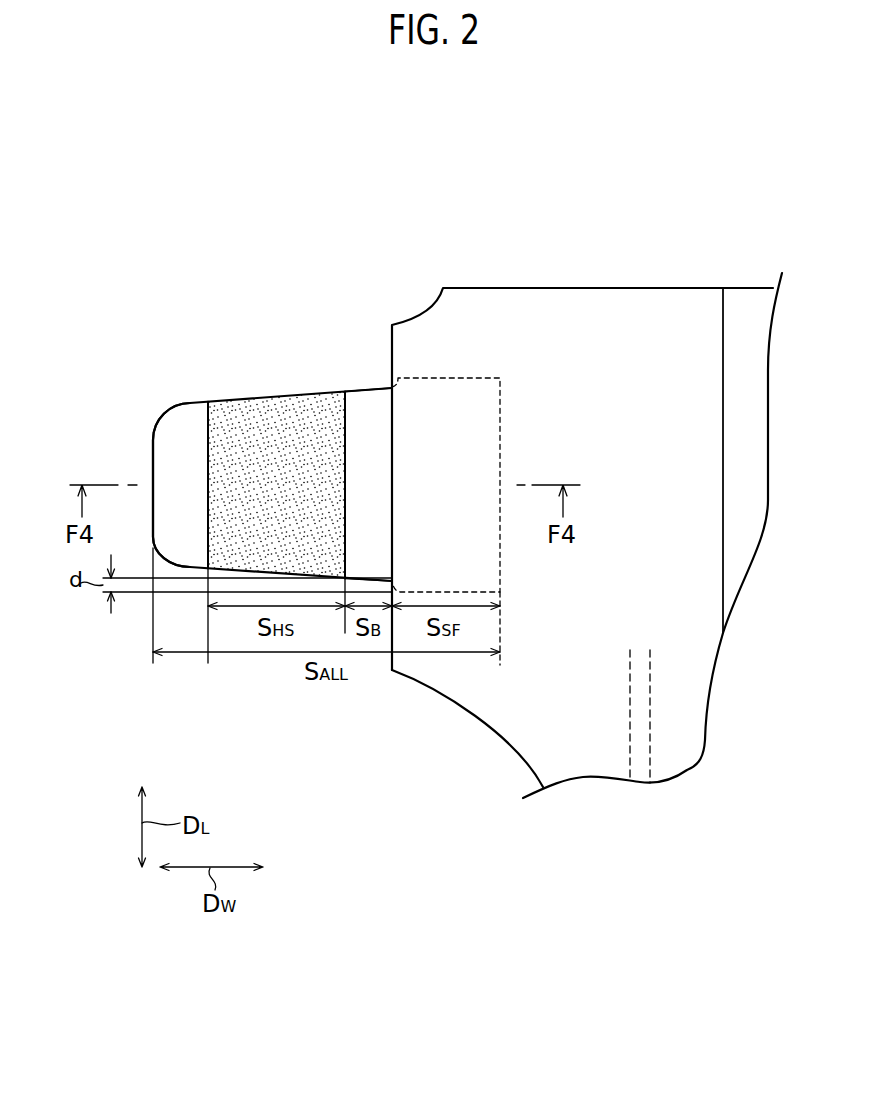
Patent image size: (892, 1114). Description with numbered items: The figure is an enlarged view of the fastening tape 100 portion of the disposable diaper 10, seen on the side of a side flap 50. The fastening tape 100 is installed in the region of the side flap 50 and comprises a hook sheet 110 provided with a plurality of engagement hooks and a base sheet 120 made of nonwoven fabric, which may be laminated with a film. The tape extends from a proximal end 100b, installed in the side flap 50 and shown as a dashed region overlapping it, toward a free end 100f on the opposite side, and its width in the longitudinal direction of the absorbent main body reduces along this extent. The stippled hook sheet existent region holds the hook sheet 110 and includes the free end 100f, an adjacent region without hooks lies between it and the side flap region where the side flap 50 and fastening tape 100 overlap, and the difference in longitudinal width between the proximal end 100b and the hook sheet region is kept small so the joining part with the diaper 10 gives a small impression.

The disposable diaper 10 is at (592, 475).
The side flap 50 is at (585, 302).
The fastening tape 100 is at (272, 420).
The free end 100f is at (151, 448).
The proximal end 100b is at (464, 415).
The hook sheet 110 is at (305, 410).
The base sheet 120 is at (365, 403).